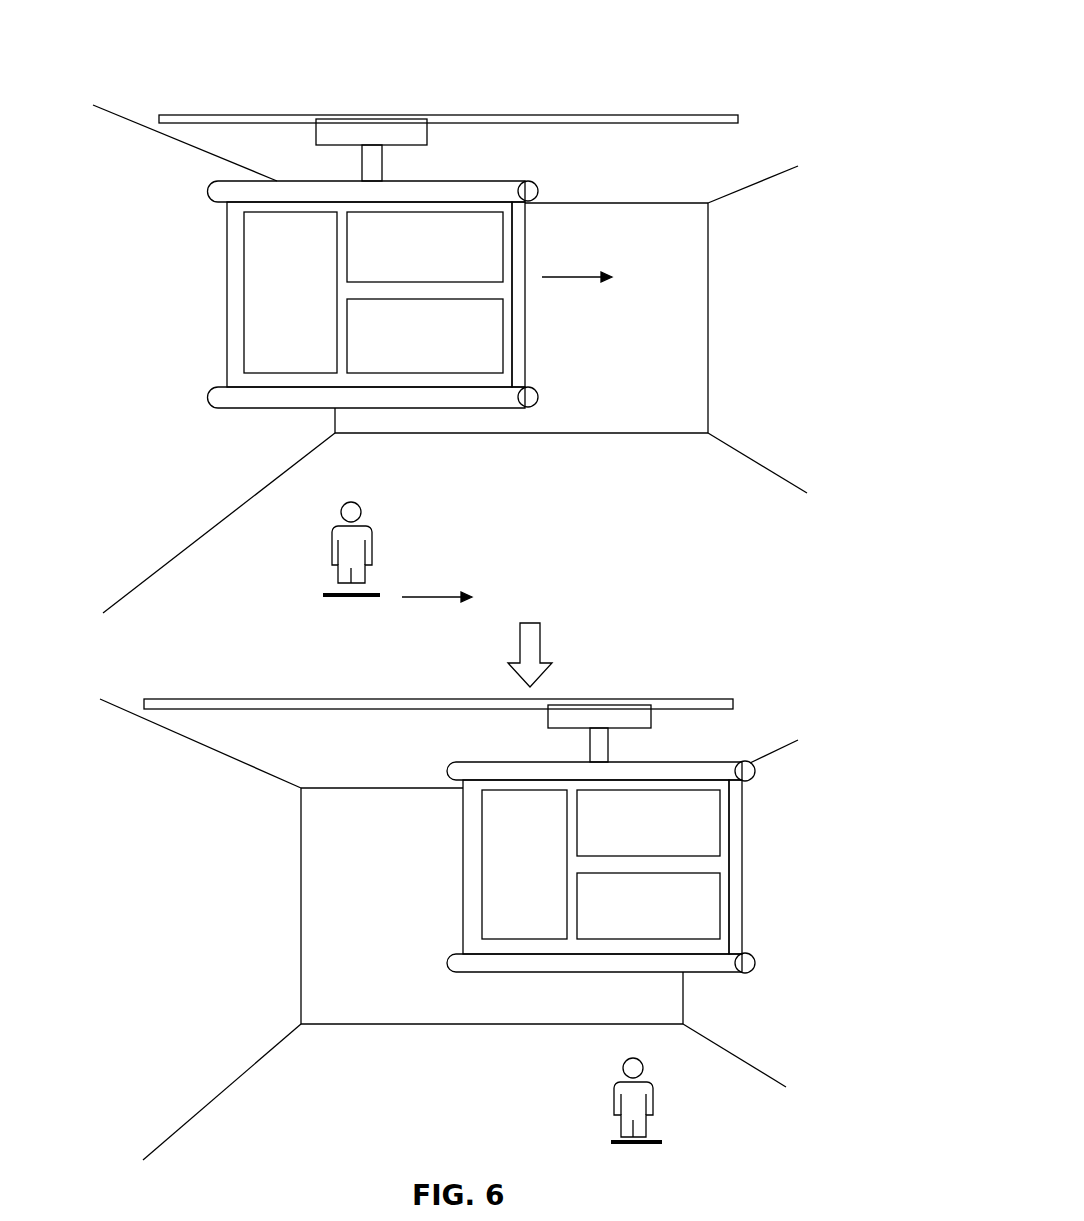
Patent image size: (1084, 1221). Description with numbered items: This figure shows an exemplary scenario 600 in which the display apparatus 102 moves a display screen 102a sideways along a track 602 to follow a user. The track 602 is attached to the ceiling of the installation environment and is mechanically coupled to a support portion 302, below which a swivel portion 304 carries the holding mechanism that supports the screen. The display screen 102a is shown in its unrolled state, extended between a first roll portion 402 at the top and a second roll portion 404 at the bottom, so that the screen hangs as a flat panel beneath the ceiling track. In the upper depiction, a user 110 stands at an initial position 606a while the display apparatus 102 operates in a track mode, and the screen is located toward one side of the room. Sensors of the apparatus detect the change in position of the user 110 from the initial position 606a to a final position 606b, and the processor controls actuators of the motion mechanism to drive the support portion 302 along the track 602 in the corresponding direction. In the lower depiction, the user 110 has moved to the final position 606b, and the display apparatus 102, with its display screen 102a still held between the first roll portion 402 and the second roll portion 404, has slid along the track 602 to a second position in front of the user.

The exemplary scenario 600 is at (780, 50).
The track 602 is at (227, 114).
The support portion 302 is at (428, 142).
The swivel portion 304 is at (381, 178).
The display apparatus 102 is at (315, 180).
The first roll portion 402 is at (208, 188).
The second roll portion 404 is at (210, 393).
The display screen 102a is at (225, 290).
The user 110 is at (332, 528).
The initial position 606a is at (384, 593).
The final position 606b is at (661, 1138).